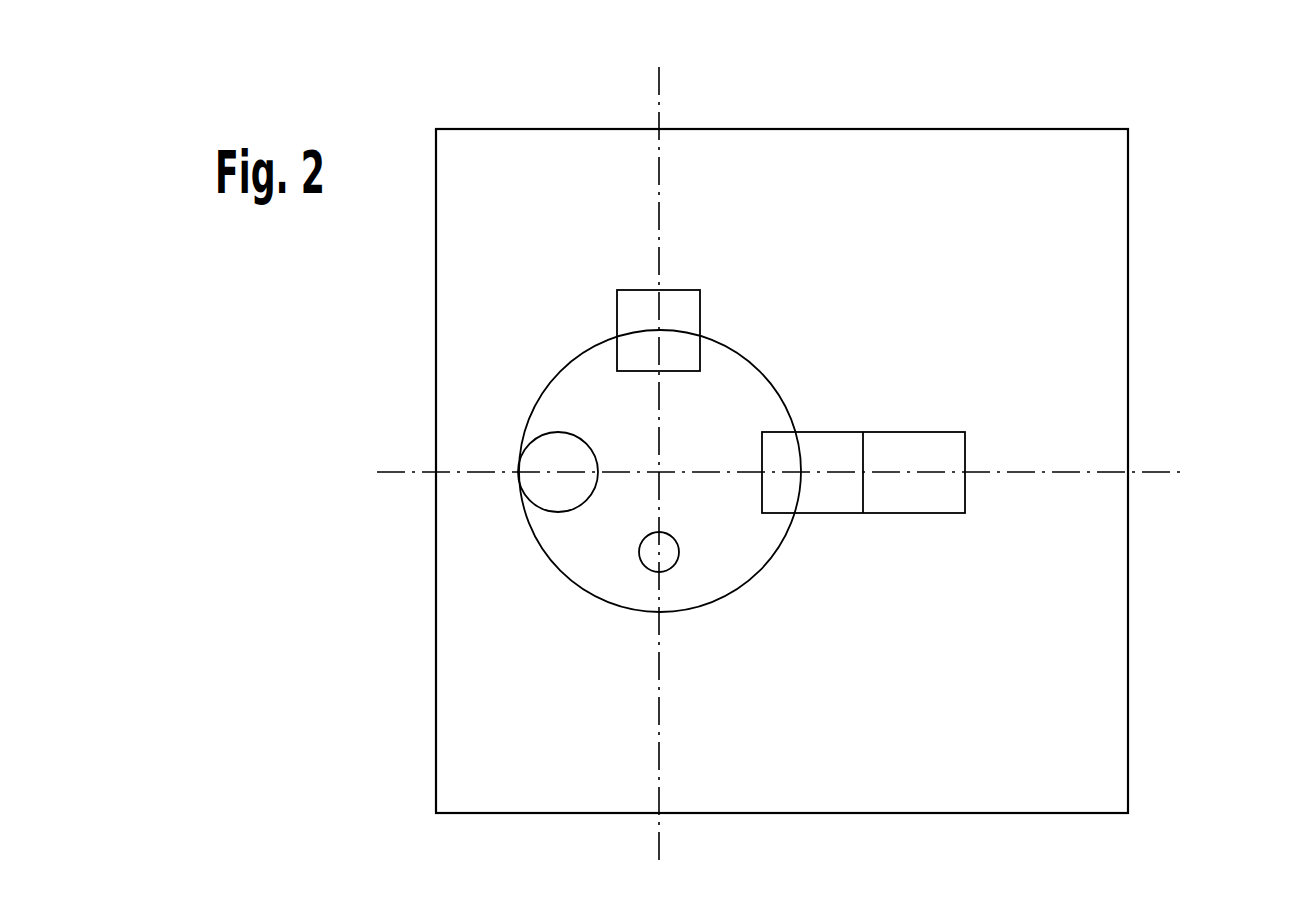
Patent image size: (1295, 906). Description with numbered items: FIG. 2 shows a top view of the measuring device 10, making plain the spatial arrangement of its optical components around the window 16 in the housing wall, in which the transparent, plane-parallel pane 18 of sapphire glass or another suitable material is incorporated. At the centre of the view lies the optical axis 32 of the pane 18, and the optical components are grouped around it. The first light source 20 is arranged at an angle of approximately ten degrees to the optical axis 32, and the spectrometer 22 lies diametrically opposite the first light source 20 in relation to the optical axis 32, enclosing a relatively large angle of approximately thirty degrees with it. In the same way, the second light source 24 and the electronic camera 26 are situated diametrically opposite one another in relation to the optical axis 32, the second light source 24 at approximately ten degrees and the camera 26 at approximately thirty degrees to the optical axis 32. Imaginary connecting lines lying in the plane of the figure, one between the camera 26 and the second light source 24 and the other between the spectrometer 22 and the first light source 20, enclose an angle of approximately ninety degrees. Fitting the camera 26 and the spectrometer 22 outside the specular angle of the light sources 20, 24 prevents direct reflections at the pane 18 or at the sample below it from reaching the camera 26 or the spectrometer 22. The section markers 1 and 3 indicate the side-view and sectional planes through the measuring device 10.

The measuring device 10 is at (1200, 92).
The window 16 is at (753, 578).
The pane 18 is at (712, 547).
The first light source 20 is at (555, 497).
The spectrometer 22 is at (863, 430).
The second light source 24 is at (650, 553).
The electronic camera 26 is at (700, 318).
The optical axis 32 is at (658, 472).
The section line 1- 1 is at (395, 478).
The section line 3- 3 is at (662, 88).